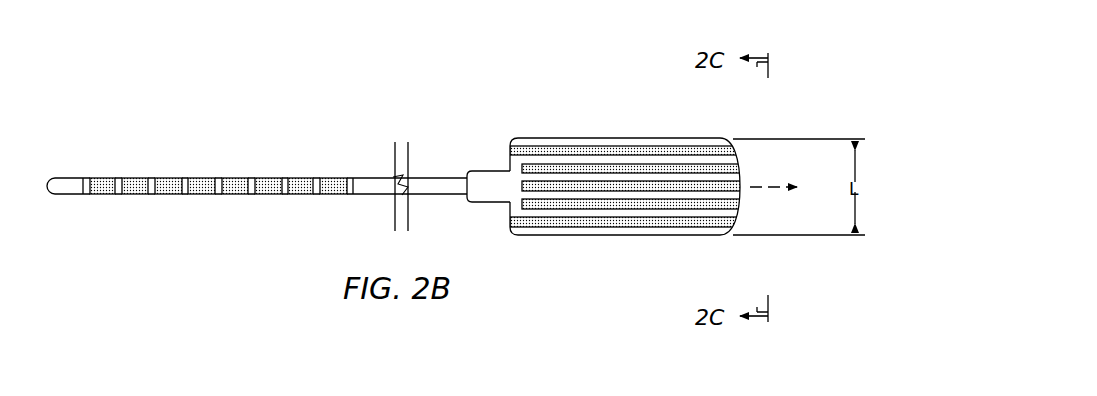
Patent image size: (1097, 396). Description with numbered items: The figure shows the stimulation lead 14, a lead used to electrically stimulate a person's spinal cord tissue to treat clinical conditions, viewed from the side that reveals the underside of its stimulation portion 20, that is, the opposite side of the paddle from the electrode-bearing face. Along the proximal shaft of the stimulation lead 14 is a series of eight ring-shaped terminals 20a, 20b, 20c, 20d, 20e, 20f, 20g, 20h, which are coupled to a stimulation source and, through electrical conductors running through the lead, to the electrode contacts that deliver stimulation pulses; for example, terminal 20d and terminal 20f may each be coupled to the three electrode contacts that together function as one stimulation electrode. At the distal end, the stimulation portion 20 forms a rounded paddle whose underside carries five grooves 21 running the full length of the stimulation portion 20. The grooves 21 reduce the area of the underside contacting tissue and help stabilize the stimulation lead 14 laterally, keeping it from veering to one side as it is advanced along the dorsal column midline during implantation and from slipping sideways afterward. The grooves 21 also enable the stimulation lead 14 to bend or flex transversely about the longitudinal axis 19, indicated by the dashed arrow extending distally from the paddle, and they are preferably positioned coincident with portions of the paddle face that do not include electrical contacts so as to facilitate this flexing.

The stimulation lead 14 is at (360, 66).
The terminal 20a is at (103, 177).
The terminal 20b is at (135, 195).
The terminal 20c is at (168, 177).
The terminal 20d is at (200, 195).
The terminal 20e is at (235, 177).
The terminal 20f is at (268, 195).
The terminal 20g is at (300, 177).
The terminal 20h is at (335, 195).
The stimulation portion 20 is at (580, 137).
The grooves 21 is at (526, 187).
The longitudinal axis 19 is at (773, 188).